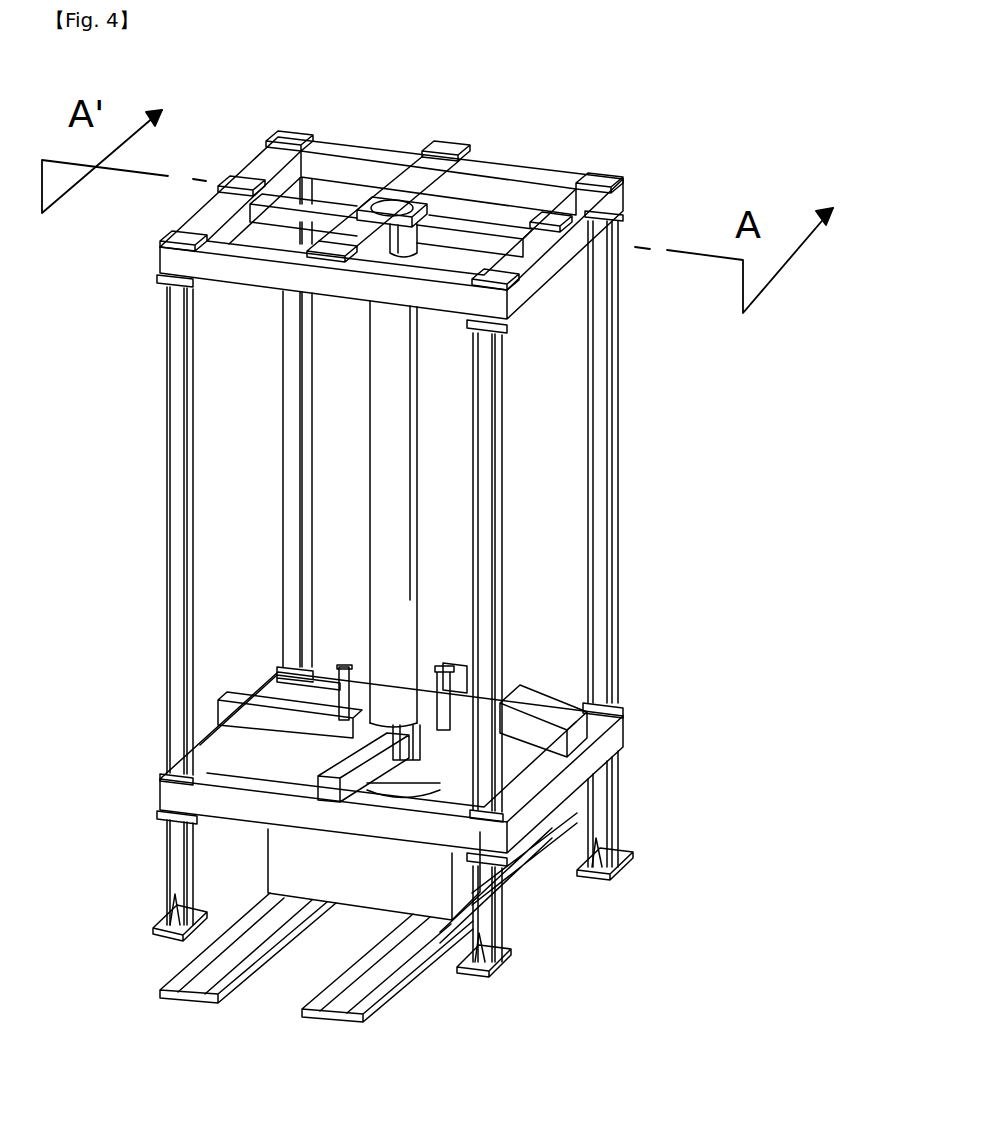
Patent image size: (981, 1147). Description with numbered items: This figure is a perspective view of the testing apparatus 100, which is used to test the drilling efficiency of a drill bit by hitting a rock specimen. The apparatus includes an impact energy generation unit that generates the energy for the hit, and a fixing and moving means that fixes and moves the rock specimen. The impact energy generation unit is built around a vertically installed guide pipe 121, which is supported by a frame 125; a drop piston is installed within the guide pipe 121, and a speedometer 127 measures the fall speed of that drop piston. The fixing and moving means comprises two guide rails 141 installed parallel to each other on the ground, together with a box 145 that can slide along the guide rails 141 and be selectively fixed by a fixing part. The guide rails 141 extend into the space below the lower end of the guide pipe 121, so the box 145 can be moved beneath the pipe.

The testing apparatus 100 is at (393, 554).
The guide pipe 121 is at (400, 455).
The frame 125 is at (603, 400).
The speedometer 127 is at (342, 665).
The guide rail 141 is at (317, 992).
The box 145 is at (283, 857).